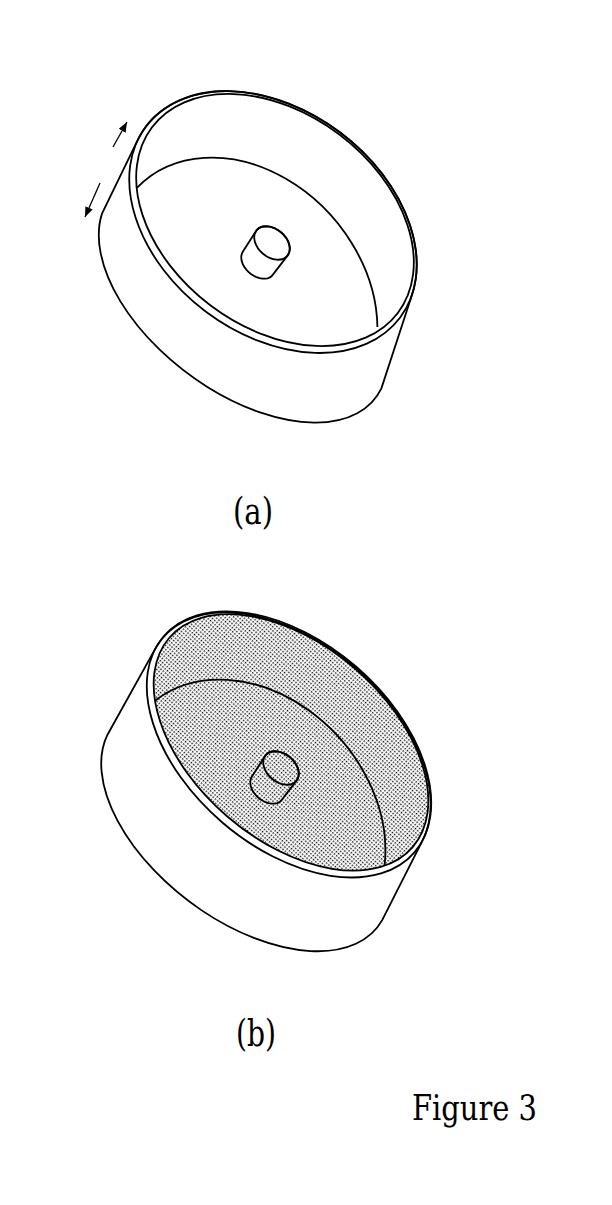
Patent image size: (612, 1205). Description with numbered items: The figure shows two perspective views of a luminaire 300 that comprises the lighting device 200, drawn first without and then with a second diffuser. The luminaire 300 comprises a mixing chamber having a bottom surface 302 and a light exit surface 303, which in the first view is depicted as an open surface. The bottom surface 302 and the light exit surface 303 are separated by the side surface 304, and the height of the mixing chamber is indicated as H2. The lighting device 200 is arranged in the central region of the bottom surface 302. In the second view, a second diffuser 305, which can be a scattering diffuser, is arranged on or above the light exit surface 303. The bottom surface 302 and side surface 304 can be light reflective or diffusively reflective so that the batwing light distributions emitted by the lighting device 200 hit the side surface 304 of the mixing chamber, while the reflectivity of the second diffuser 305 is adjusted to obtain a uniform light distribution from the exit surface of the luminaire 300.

The luminaire 300 is at (378, 80).
The bottom surface 302 is at (348, 322).
The light exit surface 303 is at (383, 253).
The side surface 304 is at (223, 116).
The lighting device 200 is at (293, 230).
The second diffuser 305 is at (383, 723).
The height of the mixing chamber H2 is at (106, 169).